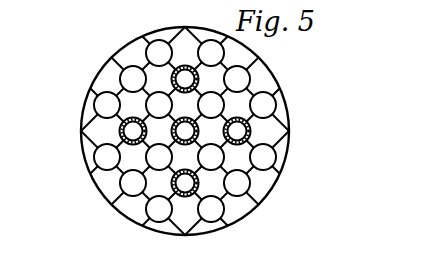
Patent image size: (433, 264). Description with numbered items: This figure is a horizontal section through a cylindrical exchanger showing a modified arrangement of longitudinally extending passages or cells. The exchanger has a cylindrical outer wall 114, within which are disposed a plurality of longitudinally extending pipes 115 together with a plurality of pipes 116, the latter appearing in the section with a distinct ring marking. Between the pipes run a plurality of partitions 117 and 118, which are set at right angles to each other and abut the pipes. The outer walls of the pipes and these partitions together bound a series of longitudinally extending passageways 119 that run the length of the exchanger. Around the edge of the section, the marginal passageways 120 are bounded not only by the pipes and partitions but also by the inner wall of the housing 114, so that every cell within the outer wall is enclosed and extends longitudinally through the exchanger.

The cylindrical outer wall 114 is at (268, 71).
The longitudinally extending pipes 115 is at (272, 163).
The pipes 116 is at (120, 133).
The partitions 117 is at (283, 121).
The partitions 118 is at (278, 146).
The longitudinally extending passageways 119 is at (155, 192).
The marginal passageways 120 is at (247, 210).